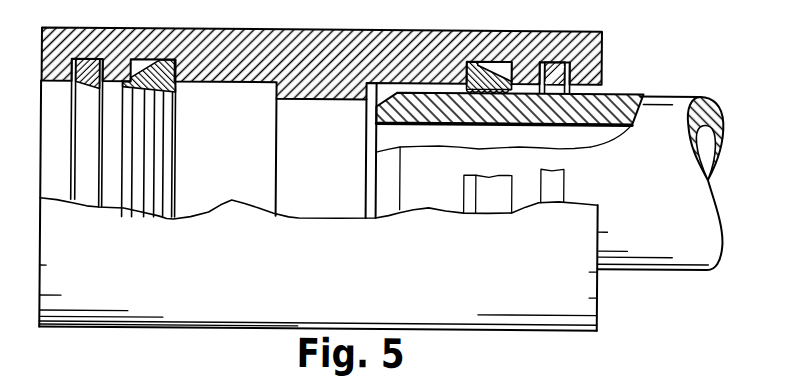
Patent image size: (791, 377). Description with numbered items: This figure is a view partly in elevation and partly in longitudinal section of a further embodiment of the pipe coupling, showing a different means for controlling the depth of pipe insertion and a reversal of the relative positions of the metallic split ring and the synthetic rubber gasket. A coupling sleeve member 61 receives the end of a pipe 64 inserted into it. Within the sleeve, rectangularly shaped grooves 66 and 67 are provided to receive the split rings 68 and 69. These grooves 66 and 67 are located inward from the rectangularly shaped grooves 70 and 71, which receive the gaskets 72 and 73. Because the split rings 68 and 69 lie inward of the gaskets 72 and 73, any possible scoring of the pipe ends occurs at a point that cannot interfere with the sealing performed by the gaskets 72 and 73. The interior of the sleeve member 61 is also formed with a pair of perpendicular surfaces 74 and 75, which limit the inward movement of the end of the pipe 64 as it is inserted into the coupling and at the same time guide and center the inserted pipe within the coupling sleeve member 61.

The coupling sleeve member 61 is at (322, 28).
The pipe 64 is at (668, 102).
The rectangularly shaped groove 66 is at (501, 62).
The rectangularly shaped groove 67 is at (137, 60).
The split ring 68 is at (490, 62).
The split ring 69 is at (156, 60).
The rectangularly shaped groove 70 is at (572, 62).
The rectangularly shaped groove 71 is at (75, 57).
The gasket 72 is at (549, 62).
The gasket 73 is at (88, 57).
The perpendicular surface 74 is at (376, 89).
The perpendicular surface 75 is at (258, 90).